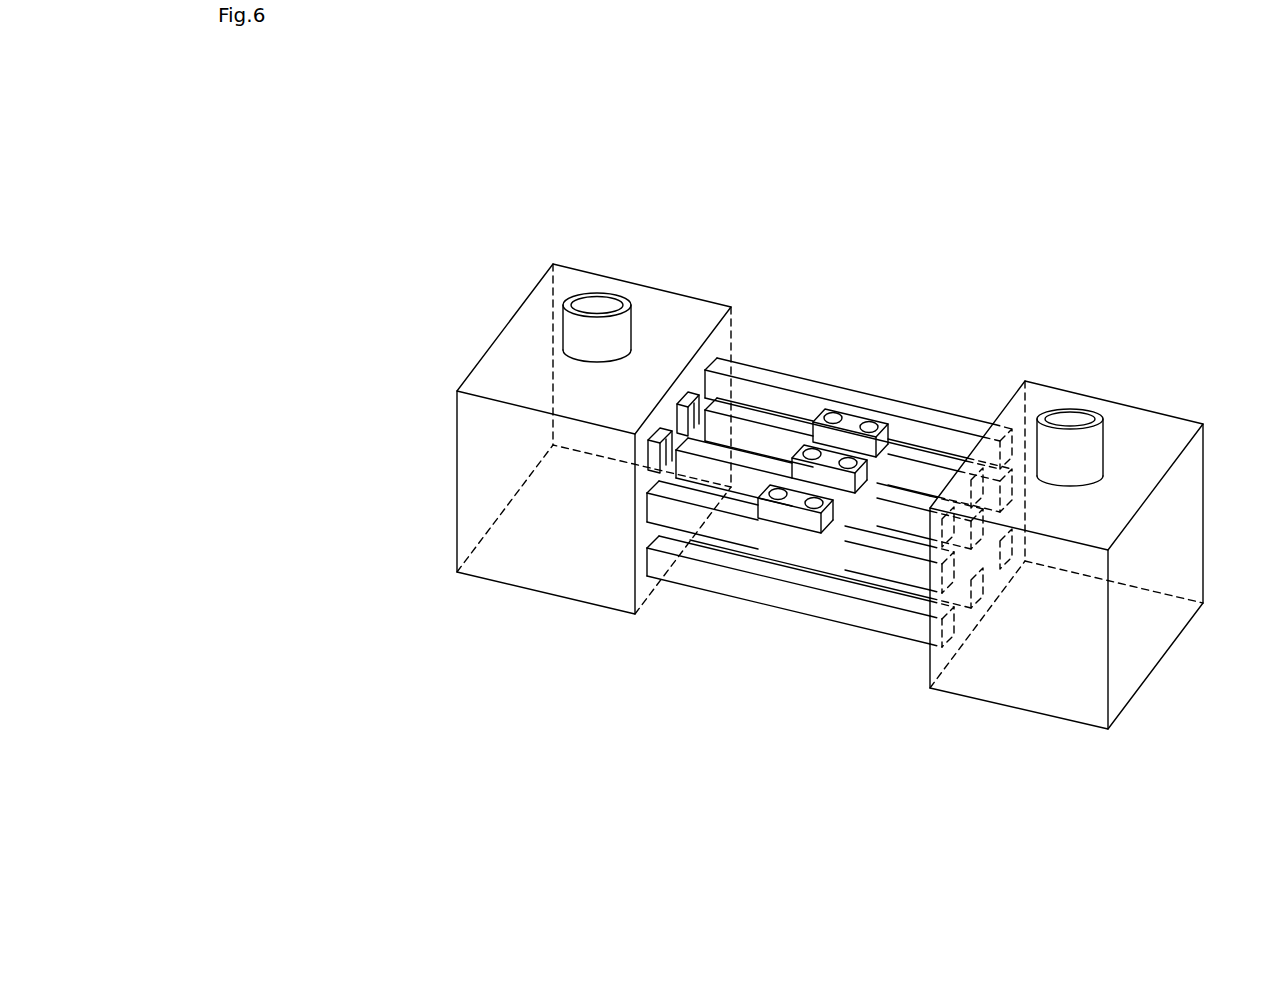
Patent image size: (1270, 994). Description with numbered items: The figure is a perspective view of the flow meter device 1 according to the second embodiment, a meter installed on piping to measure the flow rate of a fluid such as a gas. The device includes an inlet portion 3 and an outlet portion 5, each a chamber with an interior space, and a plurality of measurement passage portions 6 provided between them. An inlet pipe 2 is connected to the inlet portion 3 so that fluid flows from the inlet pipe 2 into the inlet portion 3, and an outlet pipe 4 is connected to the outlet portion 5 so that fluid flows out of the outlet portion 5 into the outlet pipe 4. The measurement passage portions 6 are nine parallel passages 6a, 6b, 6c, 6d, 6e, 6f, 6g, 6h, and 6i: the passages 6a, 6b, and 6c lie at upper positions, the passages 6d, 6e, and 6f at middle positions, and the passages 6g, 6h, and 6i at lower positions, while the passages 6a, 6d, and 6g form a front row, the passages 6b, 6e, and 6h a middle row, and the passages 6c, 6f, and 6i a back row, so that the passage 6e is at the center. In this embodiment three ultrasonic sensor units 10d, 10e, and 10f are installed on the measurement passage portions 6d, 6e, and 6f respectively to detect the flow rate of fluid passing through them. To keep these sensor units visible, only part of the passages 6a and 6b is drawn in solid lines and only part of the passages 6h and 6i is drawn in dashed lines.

The flow meter device 1 is at (1070, 207).
The inlet pipe 2 is at (607, 292).
The inlet portion 3 is at (543, 592).
The outlet pipe 4 is at (1095, 418).
The outlet portion 5 is at (1200, 535).
The measurement passage portions 6 is at (862, 697).
The measurement passage portion 6a is at (937, 512).
The measurement passage portion 6b is at (986, 460).
The measurement passage portion 6c is at (1005, 465).
The measurement passage portion 6d is at (930, 592).
The measurement passage portion 6e is at (985, 560).
The measurement passage portion 6f is at (1007, 500).
The measurement passage portion 6g is at (951, 655).
The measurement passage portion 6h is at (973, 605).
The measurement passage portion 6i is at (1013, 560).
The ultrasonic sensor unit 10d is at (790, 495).
The ultrasonic sensor unit 10e is at (797, 447).
The ultrasonic sensor unit 10f is at (868, 413).